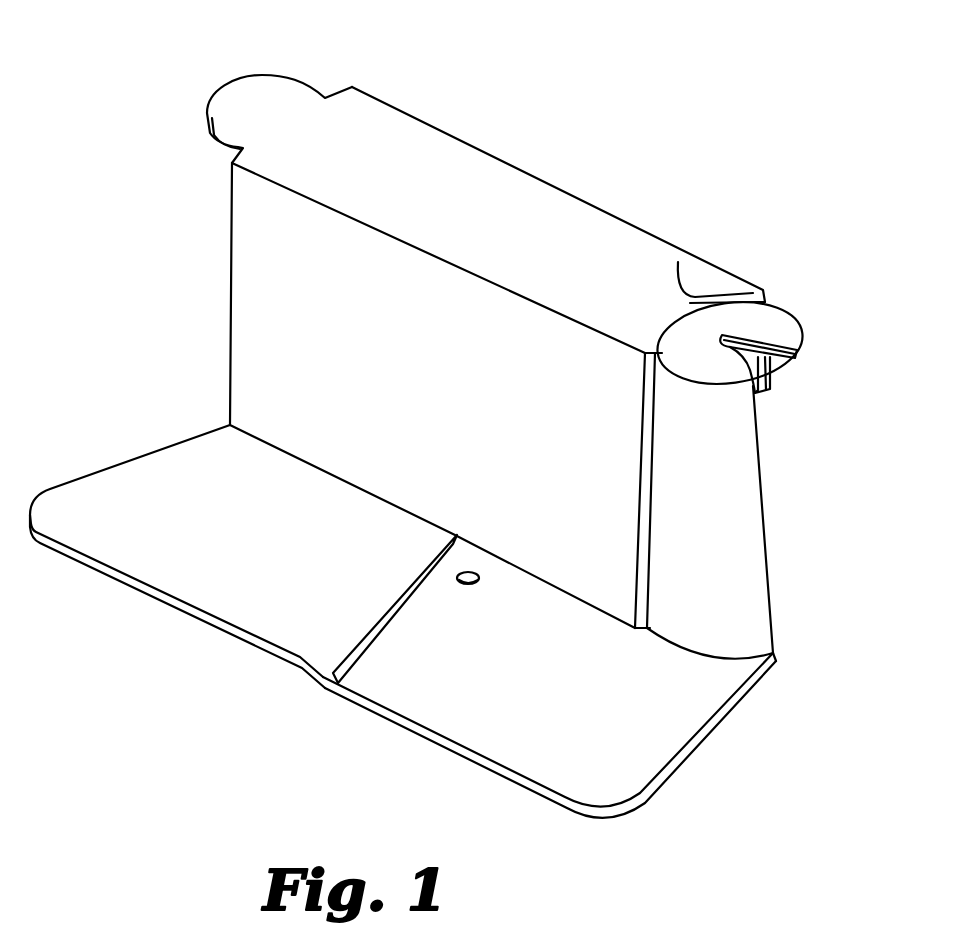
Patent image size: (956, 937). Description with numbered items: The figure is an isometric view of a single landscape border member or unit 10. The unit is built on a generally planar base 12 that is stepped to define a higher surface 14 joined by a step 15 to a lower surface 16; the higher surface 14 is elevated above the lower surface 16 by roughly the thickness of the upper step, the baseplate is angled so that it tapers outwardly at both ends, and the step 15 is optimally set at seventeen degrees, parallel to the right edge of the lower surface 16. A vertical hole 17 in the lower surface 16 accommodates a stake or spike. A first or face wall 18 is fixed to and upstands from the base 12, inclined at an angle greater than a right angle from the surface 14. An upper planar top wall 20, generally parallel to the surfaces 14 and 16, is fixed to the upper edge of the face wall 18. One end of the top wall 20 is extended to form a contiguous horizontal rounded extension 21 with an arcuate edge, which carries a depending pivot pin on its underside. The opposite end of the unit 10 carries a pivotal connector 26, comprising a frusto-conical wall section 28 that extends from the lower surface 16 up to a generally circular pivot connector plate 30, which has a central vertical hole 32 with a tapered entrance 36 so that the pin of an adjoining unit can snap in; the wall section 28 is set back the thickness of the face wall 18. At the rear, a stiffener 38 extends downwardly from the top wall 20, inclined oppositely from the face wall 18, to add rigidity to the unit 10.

The landscape border member 10 is at (190, 242).
The base 12 is at (162, 614).
The higher surface 14 is at (254, 530).
The step 15 is at (357, 640).
The lower surface 16 is at (550, 691).
The vertical hole 17 is at (469, 584).
The first wall 18 is at (436, 404).
The top wall 20 is at (504, 236).
The rounded extension 21 is at (293, 78).
The pivotal connector 26 is at (791, 304).
The frusto-conical wall section 28 is at (721, 494).
The pivot connector plate 30 is at (790, 333).
The central vertical hole 32 is at (678, 265).
The tapered entrance 36 is at (782, 362).
The stiffener 38 is at (780, 380).